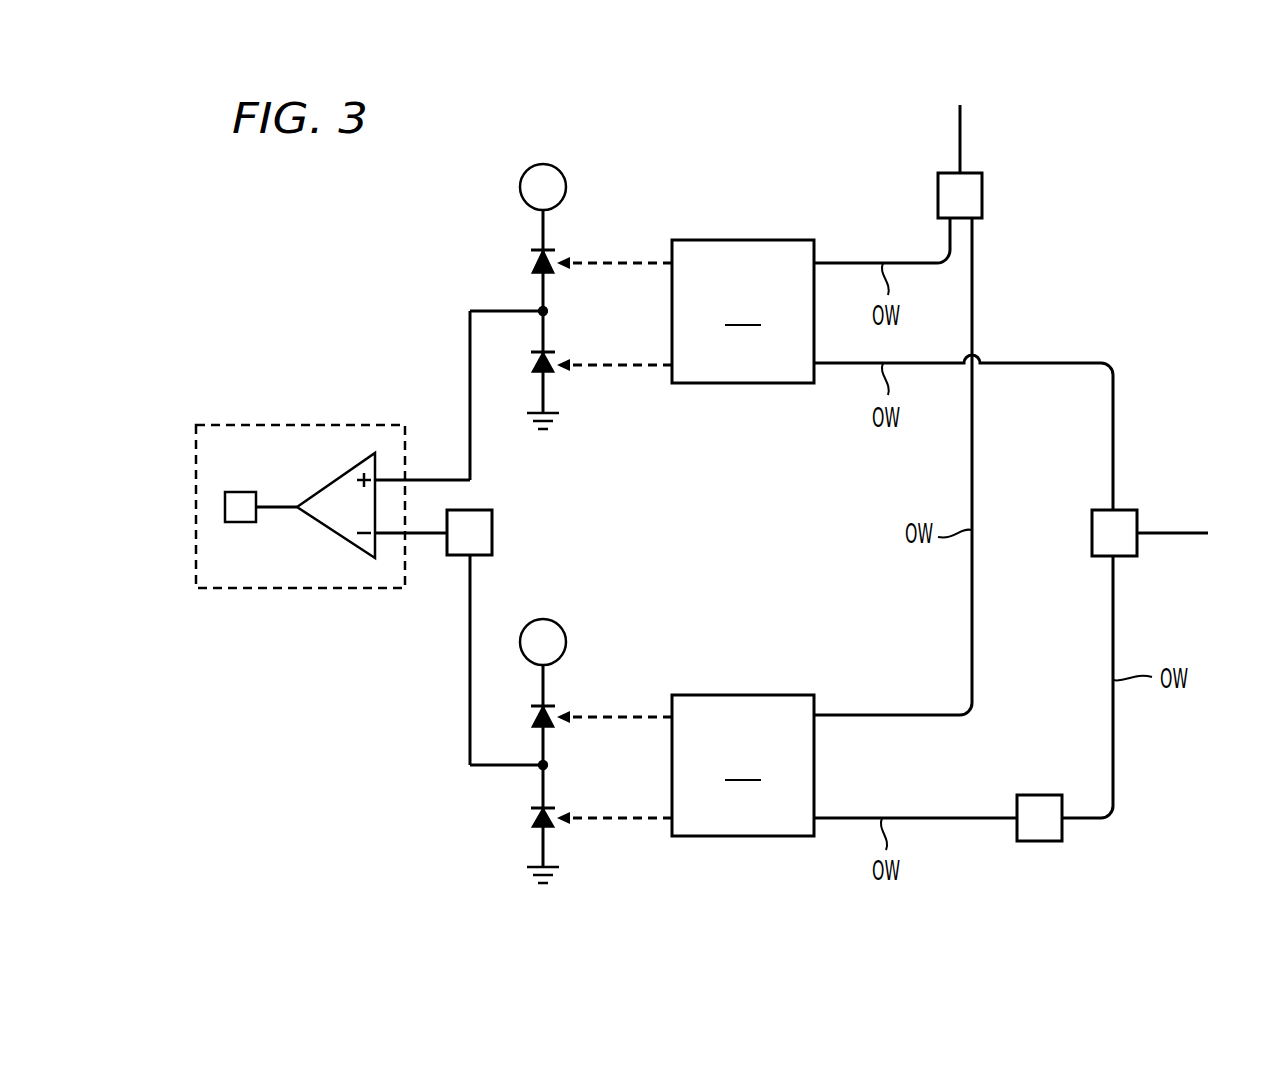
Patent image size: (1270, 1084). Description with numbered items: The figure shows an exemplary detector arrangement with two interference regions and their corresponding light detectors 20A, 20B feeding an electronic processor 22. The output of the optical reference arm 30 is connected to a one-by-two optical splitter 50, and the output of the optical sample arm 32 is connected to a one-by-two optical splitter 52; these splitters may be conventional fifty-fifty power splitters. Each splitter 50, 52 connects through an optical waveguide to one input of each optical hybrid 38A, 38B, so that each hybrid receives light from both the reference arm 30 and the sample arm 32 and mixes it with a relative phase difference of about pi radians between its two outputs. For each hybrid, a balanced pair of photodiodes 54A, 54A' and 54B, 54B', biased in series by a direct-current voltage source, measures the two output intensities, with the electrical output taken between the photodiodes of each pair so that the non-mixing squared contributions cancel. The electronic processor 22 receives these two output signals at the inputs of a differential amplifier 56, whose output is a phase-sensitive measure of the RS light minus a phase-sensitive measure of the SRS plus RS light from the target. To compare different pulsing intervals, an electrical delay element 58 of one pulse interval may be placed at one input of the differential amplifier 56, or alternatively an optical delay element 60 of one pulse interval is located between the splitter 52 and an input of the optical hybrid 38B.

The light detector 20A is at (512, 296).
The light detector 20B is at (479, 751).
The electronic processor 22 is at (300, 484).
The optical reference arm 30 is at (948, 136).
The optical sample arm 32 is at (1177, 519).
The optical hybrid 38A is at (743, 311).
The optical hybrid 38B is at (743, 765).
The 1×2 optical splitter 50 is at (967, 197).
The 1×2 optical splitter 52 is at (1103, 531).
The light detector 54A is at (510, 247).
The light detector 54A' is at (582, 390).
The light detector 54B is at (518, 706).
The light detector 54B' is at (503, 840).
The differential amplifier 56 is at (335, 523).
The electrical delay element 58 is at (477, 533).
The optical delay element 60 is at (1040, 827).